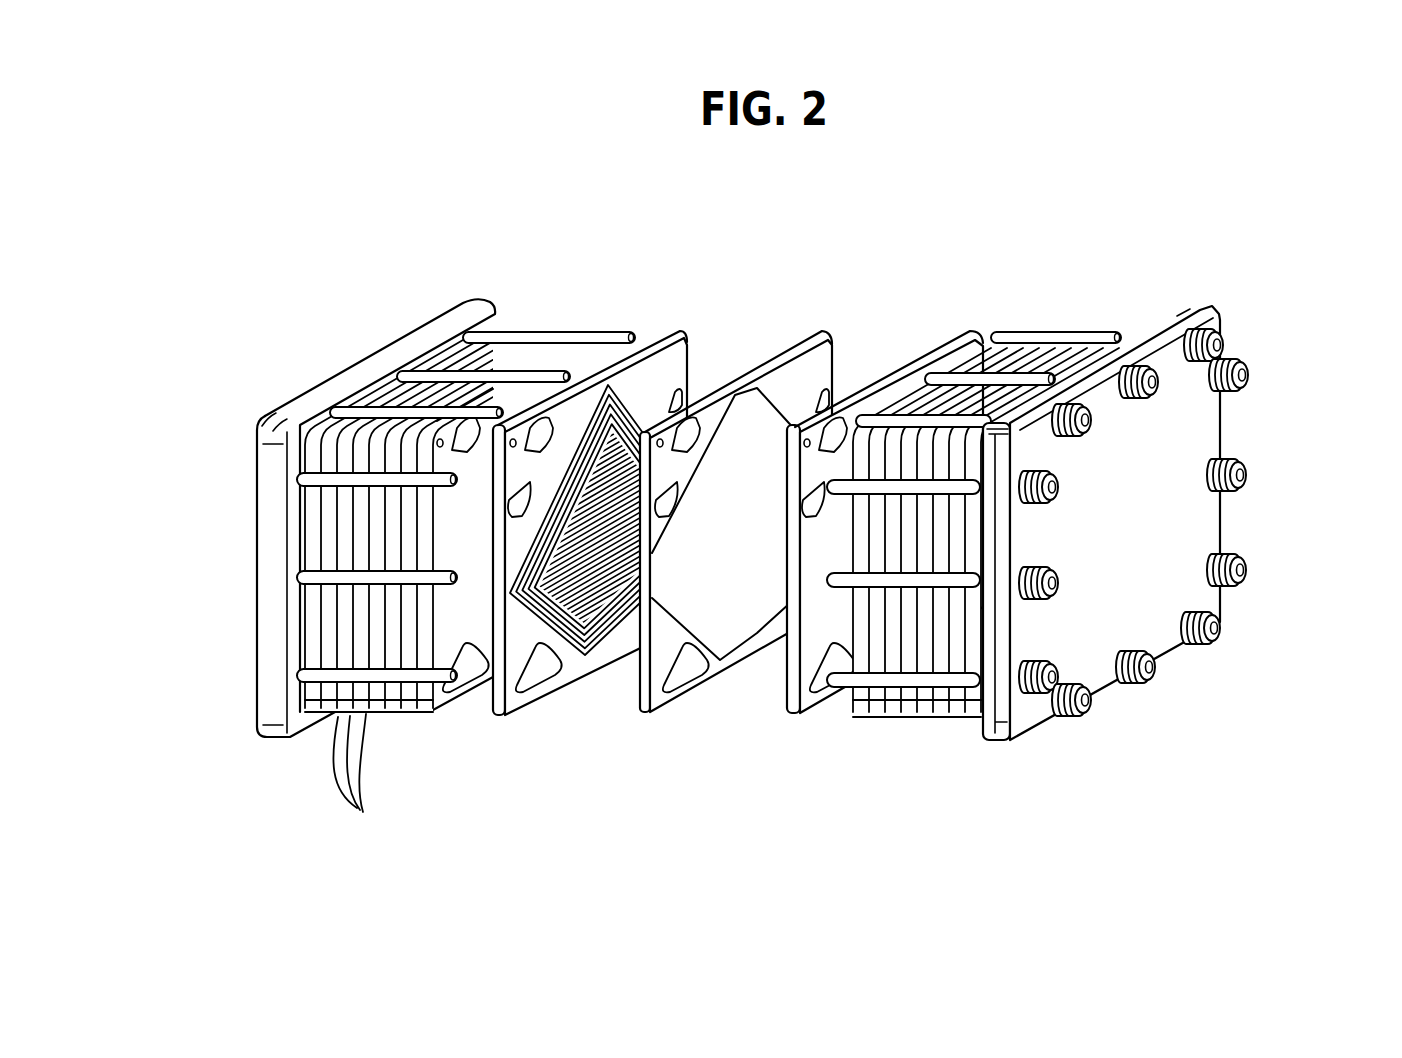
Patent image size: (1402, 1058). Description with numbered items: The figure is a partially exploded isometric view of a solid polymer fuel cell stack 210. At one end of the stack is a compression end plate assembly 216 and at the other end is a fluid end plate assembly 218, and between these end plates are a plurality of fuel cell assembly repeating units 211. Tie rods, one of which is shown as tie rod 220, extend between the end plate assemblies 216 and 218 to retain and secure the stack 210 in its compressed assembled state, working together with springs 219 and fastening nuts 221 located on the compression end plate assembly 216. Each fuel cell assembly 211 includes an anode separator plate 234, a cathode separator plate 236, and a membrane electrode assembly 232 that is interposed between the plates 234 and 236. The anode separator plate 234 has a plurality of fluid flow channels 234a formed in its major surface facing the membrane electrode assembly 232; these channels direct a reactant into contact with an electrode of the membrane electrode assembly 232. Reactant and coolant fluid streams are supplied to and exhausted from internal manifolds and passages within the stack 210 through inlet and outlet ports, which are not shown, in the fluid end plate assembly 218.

The solid polymer fuel cell stack 210 is at (1174, 224).
The fuel cell assembly repeating unit 211 is at (368, 771).
The compression end plate assembly 216 is at (1203, 438).
The fluid end plate assembly 218 is at (263, 670).
The spring 219 is at (1190, 647).
The tie rod 220 is at (552, 333).
The fastening nut 221 is at (1225, 632).
The membrane electrode assembly 232 is at (824, 335).
The anode separator plate 234 is at (673, 333).
The fluid flow channel 234a is at (592, 647).
The cathode separator plate 236 is at (968, 333).